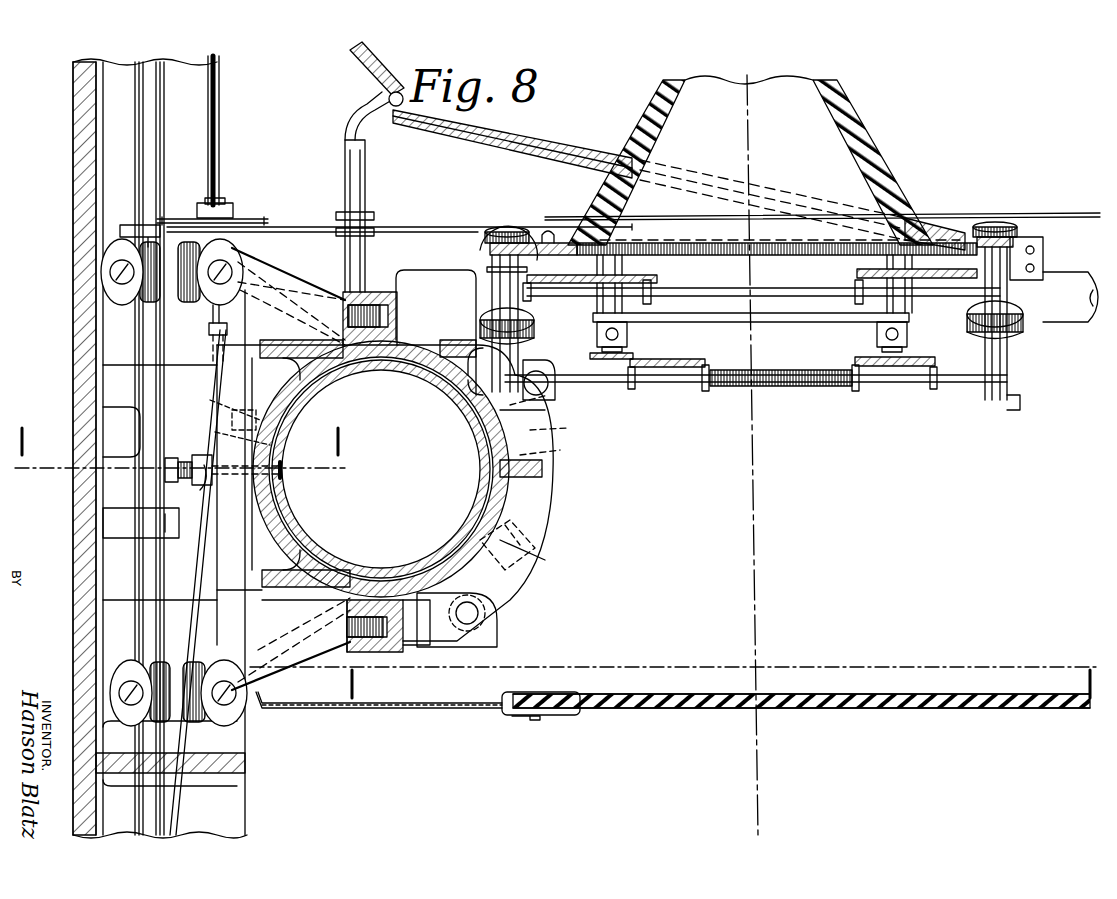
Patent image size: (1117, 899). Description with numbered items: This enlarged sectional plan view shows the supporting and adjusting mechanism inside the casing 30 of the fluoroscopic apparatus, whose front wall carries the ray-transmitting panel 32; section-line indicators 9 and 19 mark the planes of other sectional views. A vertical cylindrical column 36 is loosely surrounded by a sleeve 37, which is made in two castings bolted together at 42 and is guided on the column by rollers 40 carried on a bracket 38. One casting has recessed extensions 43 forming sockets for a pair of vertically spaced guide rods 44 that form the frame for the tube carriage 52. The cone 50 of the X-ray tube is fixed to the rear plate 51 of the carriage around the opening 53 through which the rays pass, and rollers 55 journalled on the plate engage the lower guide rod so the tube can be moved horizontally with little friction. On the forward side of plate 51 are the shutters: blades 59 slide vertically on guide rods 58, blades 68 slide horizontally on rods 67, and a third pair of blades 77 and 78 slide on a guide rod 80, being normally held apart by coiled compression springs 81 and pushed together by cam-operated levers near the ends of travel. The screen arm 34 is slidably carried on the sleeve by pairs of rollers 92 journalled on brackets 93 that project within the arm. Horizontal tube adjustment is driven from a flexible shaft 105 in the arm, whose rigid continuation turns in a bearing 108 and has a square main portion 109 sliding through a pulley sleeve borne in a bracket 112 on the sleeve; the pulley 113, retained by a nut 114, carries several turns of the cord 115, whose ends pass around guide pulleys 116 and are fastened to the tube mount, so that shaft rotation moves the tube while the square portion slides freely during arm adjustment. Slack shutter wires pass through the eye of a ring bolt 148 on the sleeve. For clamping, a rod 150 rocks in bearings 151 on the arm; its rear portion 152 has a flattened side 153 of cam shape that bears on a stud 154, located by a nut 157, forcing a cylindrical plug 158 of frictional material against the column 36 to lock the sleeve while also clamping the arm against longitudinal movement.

The section line 9- 9 is at (675, 673).
The section line 19- 19 is at (179, 456).
The casing 30 is at (446, 710).
The panel 32 is at (668, 710).
The arm 34 is at (72, 366).
The column 36 is at (410, 380).
The sleeve 37 is at (318, 392).
The bracket 38 is at (530, 420).
The rollers 40 is at (548, 449).
The bolts 42 is at (402, 316).
The recessed extensions 43 is at (420, 270).
The guide rods 44 is at (1084, 323).
The cone 50 is at (850, 125).
The rear plate 51 is at (548, 232).
The tube carriage 52 is at (1044, 262).
The opening 53 is at (726, 250).
The roller 55 is at (485, 240).
The vertical guide rods 58 is at (597, 334).
The blades 59 is at (684, 318).
The horizontal rods 67 is at (818, 288).
The blades 68 is at (860, 273).
The blade 77 is at (672, 359).
The blade 78 is at (905, 366).
The guide rod 80 is at (676, 383).
The coiled compression springs 81 is at (784, 386).
The rollers 92 is at (175, 296).
The brackets 93 is at (285, 268).
The flexible shaft 105 is at (210, 628).
The bearing 108 is at (209, 338).
The square main portion 109 is at (217, 130).
The bracket 112 is at (312, 290).
The pulley 113 is at (258, 217).
The nut 114 is at (205, 204).
The cord 115 is at (428, 226).
The guide pulleys 116 is at (372, 222).
The ring bolt 148 is at (372, 112).
The rod 150 is at (150, 580).
The bearings 151 is at (103, 516).
The rear portion 152 is at (103, 447).
The flattened side 153 is at (215, 418).
The stud 154 is at (215, 434).
The nut 157 is at (205, 488).
The cylindrical plug 158 is at (282, 470).